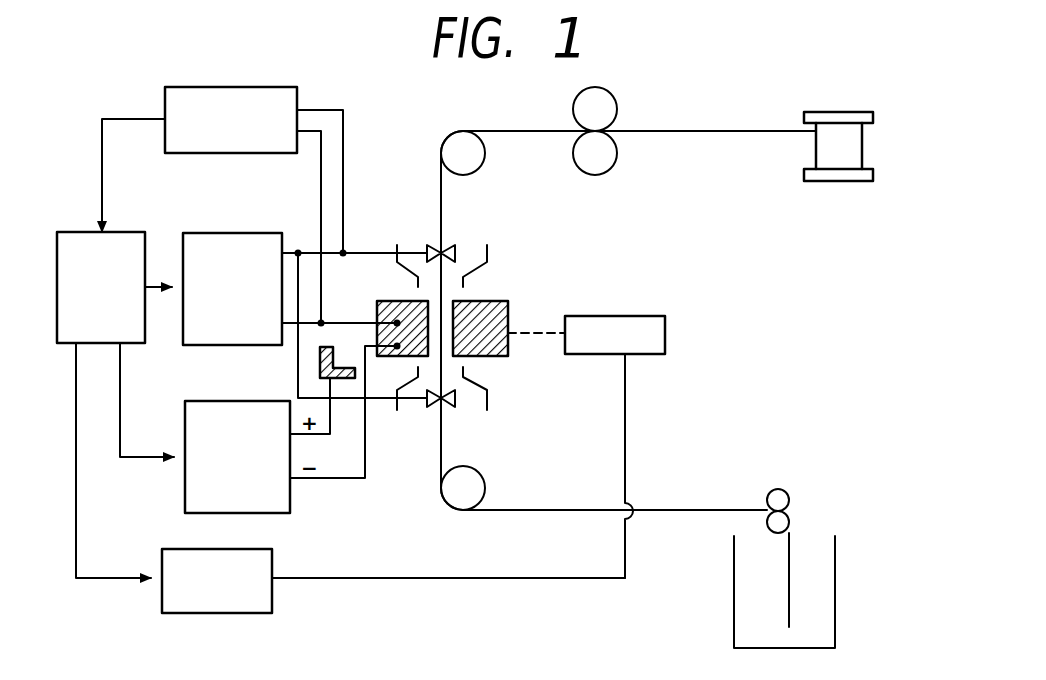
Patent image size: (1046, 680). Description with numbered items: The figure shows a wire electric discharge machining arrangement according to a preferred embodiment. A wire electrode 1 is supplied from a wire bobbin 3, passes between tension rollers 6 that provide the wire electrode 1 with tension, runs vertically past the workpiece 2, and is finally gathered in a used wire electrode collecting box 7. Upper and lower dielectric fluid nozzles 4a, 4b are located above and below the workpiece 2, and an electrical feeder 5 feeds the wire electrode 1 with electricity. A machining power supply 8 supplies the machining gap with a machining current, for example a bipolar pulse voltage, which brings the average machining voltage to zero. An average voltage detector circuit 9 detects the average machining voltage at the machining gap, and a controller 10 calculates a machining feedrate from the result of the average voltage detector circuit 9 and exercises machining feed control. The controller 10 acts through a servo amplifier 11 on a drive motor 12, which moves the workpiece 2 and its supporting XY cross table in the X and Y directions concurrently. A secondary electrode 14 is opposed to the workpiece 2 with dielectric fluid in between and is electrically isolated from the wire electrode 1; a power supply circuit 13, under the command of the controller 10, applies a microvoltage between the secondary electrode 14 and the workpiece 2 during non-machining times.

The wire electrode 1 is at (441, 210).
The workpiece 2 is at (508, 352).
The wire bobbin 3 is at (815, 181).
The upper dielectric fluid nozzle 4a is at (487, 250).
The lower dielectric fluid nozzle 4b is at (487, 402).
The electrical feeder 5 is at (436, 247).
The tension rollers 6 is at (612, 170).
The used wire electrode collecting box 7 is at (734, 590).
The machining power supply 8 is at (200, 232).
The average voltage detector circuit 9 is at (272, 87).
The controller 10 is at (72, 232).
The servo amplifier 11 is at (250, 613).
The drive motor 12 is at (665, 325).
The power supply circuit 13 is at (185, 496).
The secondary electrode 14 is at (320, 367).